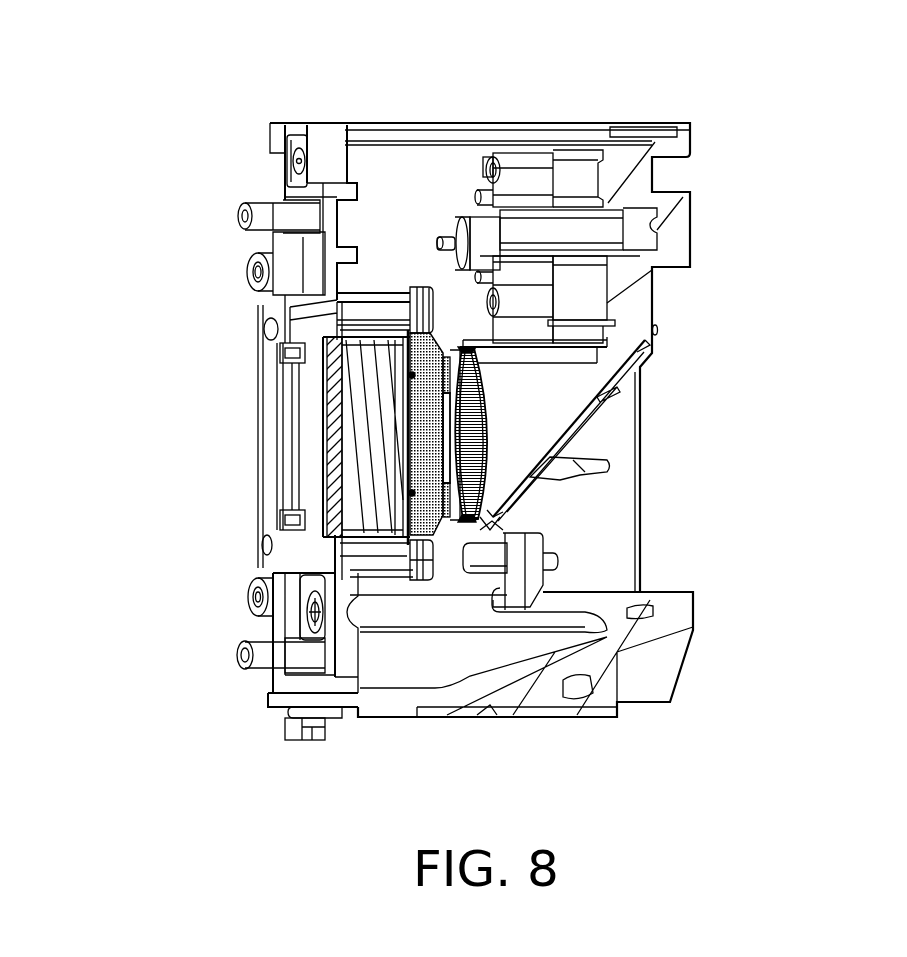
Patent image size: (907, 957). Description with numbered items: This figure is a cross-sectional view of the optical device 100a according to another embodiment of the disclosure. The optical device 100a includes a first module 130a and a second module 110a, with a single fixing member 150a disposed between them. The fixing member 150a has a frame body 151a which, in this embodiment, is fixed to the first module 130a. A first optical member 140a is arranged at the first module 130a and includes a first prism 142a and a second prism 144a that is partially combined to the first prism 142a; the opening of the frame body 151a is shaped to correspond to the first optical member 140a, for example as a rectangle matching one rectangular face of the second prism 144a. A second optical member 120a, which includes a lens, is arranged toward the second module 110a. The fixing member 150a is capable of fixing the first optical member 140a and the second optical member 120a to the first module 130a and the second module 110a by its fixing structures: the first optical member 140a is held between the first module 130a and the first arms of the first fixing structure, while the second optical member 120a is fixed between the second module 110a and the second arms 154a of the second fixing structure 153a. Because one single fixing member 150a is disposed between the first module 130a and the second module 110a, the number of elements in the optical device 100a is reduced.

The optical device 100a is at (818, 92).
The second module 110a is at (680, 600).
The second optical member 120a is at (483, 430).
The first module 130a is at (252, 312).
The first optical member 140a is at (112, 378).
The first prism 142a is at (338, 418).
The second prism 144a is at (367, 475).
The fixing member 150a is at (463, 536).
The frame body 151a is at (430, 518).
The second fixing structure 153a is at (630, 434).
The second arms 154a is at (472, 370).